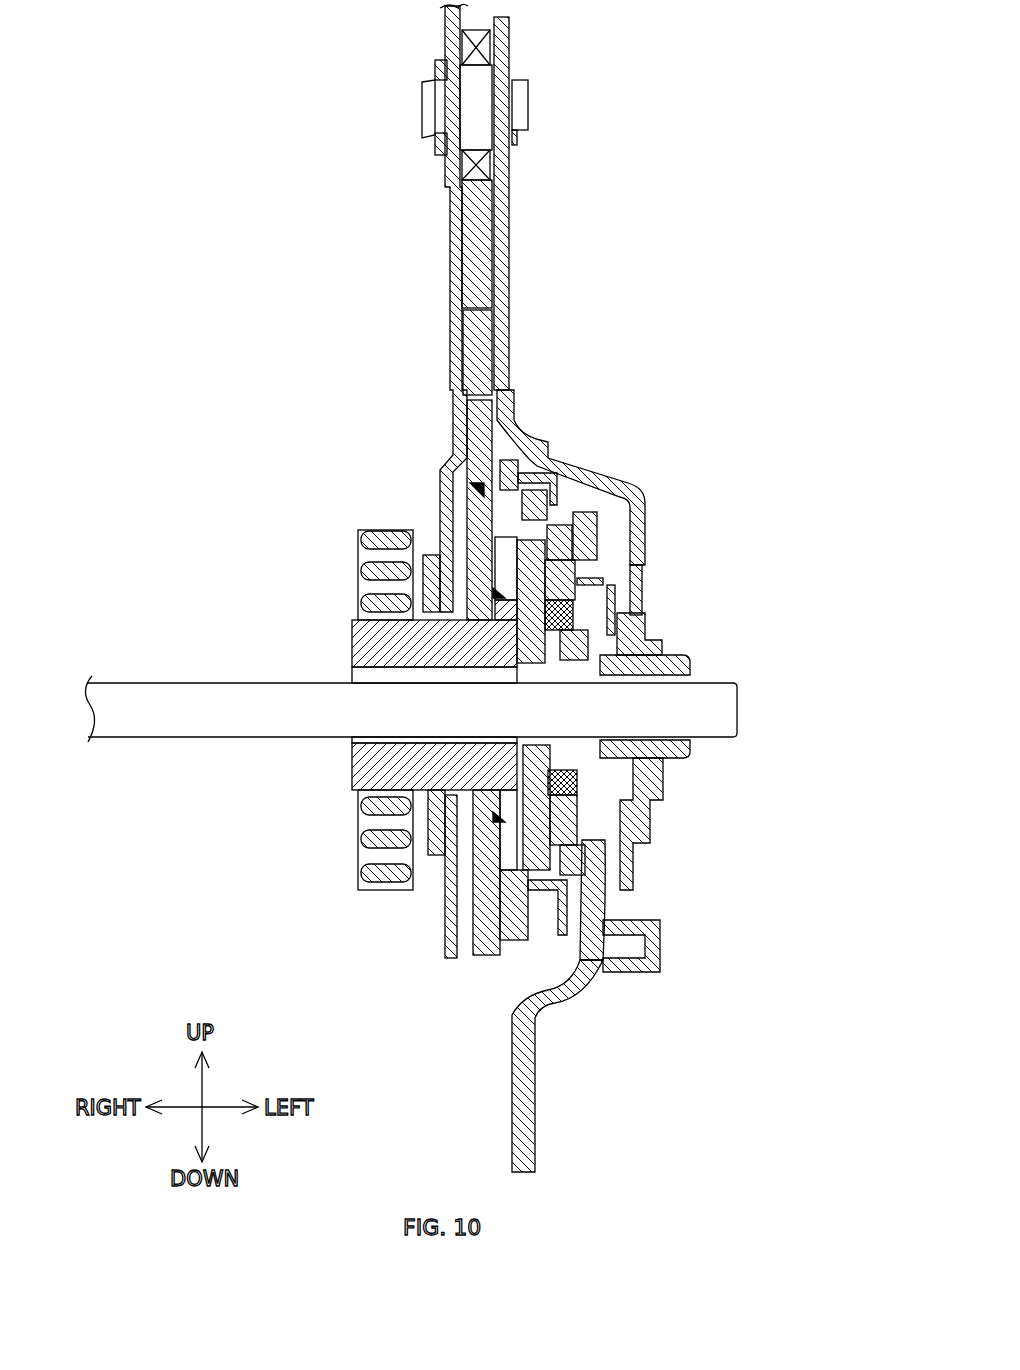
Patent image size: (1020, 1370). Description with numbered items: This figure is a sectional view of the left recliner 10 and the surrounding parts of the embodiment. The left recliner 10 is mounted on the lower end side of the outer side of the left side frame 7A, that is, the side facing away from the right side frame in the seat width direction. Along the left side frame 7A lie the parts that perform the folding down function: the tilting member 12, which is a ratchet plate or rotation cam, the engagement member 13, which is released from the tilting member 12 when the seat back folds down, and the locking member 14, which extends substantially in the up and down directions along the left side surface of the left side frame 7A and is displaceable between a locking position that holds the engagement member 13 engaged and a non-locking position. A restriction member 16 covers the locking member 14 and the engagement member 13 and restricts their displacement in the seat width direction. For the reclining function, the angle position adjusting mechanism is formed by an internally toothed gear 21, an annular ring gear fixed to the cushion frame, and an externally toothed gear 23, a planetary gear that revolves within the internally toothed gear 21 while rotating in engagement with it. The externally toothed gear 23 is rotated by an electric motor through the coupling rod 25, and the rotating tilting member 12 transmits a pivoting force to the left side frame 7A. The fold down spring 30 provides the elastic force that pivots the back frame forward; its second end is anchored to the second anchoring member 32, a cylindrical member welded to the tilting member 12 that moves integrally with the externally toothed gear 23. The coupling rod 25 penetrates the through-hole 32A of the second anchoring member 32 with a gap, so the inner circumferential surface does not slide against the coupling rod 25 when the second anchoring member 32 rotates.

The left side frame 7A is at (450, 209).
The left recliner 10 is at (690, 602).
The tilting member 12 is at (476, 438).
The engagement member 13 is at (476, 353).
The locking member 14 is at (472, 247).
The restriction member 16 is at (520, 290).
The internally toothed gear 21 is at (558, 533).
The externally toothed gear 23 is at (585, 556).
The coupling rod 25 is at (178, 683).
The fold down spring 30 is at (356, 893).
The second anchoring member 32 is at (345, 775).
The through-hole 32A is at (348, 742).